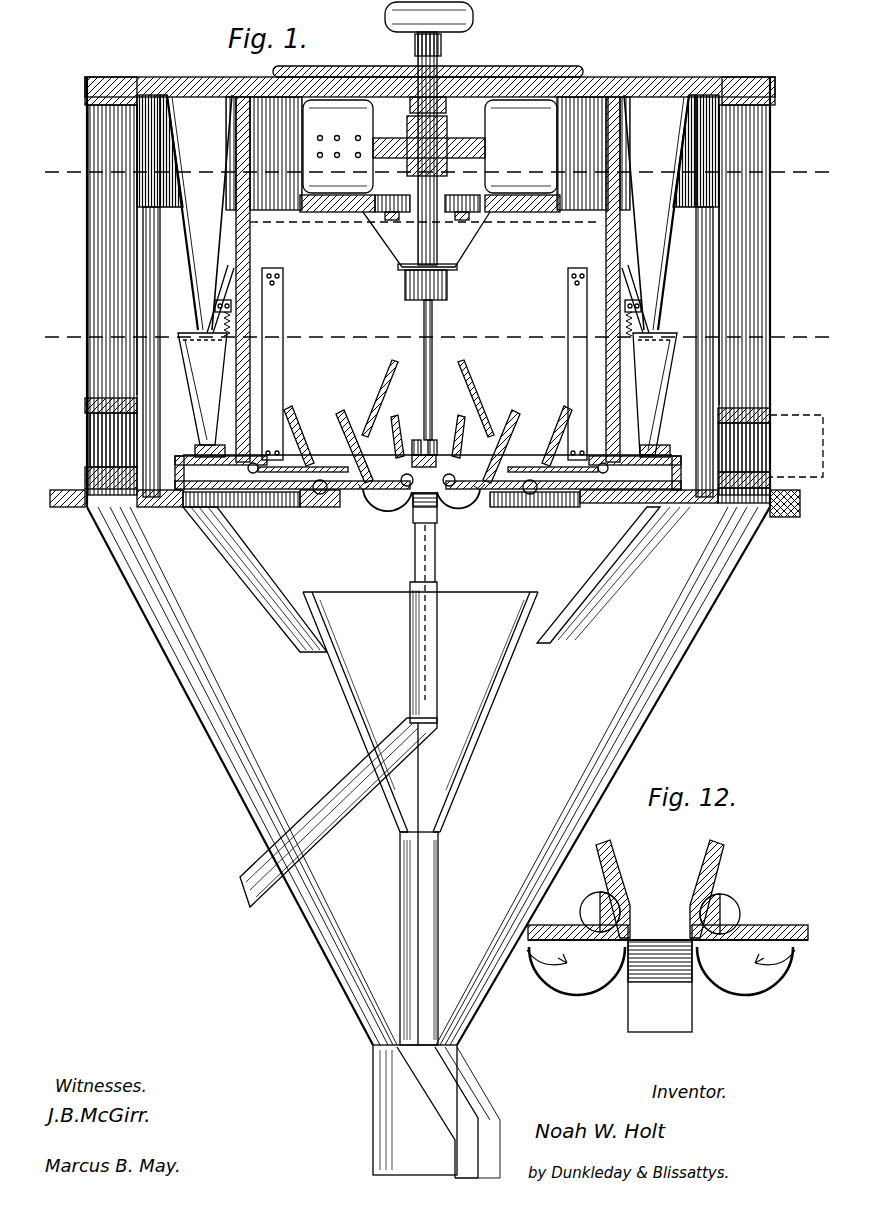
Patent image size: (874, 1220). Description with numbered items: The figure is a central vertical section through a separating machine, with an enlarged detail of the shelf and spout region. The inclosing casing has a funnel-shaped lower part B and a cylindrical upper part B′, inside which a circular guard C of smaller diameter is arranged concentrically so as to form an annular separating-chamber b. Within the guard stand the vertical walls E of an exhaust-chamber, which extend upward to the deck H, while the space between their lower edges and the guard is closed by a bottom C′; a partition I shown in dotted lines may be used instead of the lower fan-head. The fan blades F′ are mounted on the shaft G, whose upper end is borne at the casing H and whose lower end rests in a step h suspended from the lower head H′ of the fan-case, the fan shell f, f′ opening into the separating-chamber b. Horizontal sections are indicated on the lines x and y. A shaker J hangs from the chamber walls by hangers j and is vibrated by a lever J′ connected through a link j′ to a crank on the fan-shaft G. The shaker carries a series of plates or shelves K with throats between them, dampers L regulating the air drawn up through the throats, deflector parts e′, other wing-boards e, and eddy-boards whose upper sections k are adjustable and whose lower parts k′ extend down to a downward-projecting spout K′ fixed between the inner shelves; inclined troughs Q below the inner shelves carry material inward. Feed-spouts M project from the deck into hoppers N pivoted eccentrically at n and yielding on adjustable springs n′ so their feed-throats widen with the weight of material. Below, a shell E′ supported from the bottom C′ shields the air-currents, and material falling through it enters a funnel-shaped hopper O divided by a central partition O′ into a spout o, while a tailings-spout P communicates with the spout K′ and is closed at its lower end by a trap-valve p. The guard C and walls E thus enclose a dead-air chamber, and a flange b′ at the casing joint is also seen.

In FIG. 1, the casing / deck H is at (490, 74).
In FIG. 1, the link or arm j′ is at (442, 46).
In FIG. 1, the pulley / drum halves F′ is at (430, 146).
In FIG. 1, the fan shell f is at (578, 158).
In FIG. 1, the fan shaft G is at (412, 178).
In FIG. 1, the fan shell f′ is at (428, 153).
In FIG. 1, the vertical walls of exhaust-chamber E is at (251, 243).
In FIG. 1, the feed-spouts M is at (428, 212).
In FIG. 1, the guard C is at (429, 300).
In FIG. 1, the annular separating-chamber b is at (431, 255).
In FIG. 1, the upper part of casing B′ is at (87, 215).
In FIG. 1, the lower head of fan-case H′ is at (530, 213).
In FIG. 1, the partition I is at (308, 223).
In FIG. 1, the bearing or step h is at (448, 288).
In FIG. 1, the vibrating lever J′ is at (433, 332).
In FIG. 1, the section line y y is at (433, 174).
In FIG. 1, the section line x x is at (432, 341).
In FIG. 1, the hangers or links j is at (424, 364).
In FIG. 1, the hoppers N is at (427, 394).
In FIG. 1, the pivots n is at (427, 352).
In FIG. 1, the adjustable springs n′ is at (232, 330).
In FIG. 1, the wing-boards or deflectors e is at (428, 443).
In FIG. 1, the upper sections of eddy-boards k is at (428, 436).
In FIG. 12, the upper sections of eddy-boards k is at (732, 868).
In FIG. 1, the lower parts of eddy-boards k′ is at (402, 477).
In FIG. 12, the lower parts of eddy-boards k′ is at (602, 872).
In FIG. 1, the shaker J is at (427, 451).
In FIG. 1, the plates or shelves K is at (428, 472).
In FIG. 12, the plates or shelves K is at (768, 926).
In FIG. 1, the dampers L is at (547, 520).
In FIG. 12, the dampers L is at (580, 912).
In FIG. 1, the deflector parts e′ is at (428, 469).
In FIG. 1, the downward-projecting spout K′ is at (412, 502).
In FIG. 12, the downward-projecting spout K′ is at (660, 986).
In FIG. 1, the inclined troughs Q is at (421, 512).
In FIG. 12, the inclined troughs Q is at (578, 997).
In FIG. 1, the lower flange b′ is at (86, 410).
In FIG. 1, the bottom C′ is at (425, 579).
In FIG. 1, the shell E′ is at (588, 606).
In FIG. 1, the funnel-shaped hopper O is at (420, 712).
In FIG. 1, the tailings-spout P is at (438, 700).
In FIG. 1, the trap-valve p is at (240, 888).
In FIG. 1, the central partition O′ is at (441, 888).
In FIG. 1, the spout o is at (441, 962).
In FIG. 1, the lower part of casing B is at (224, 750).